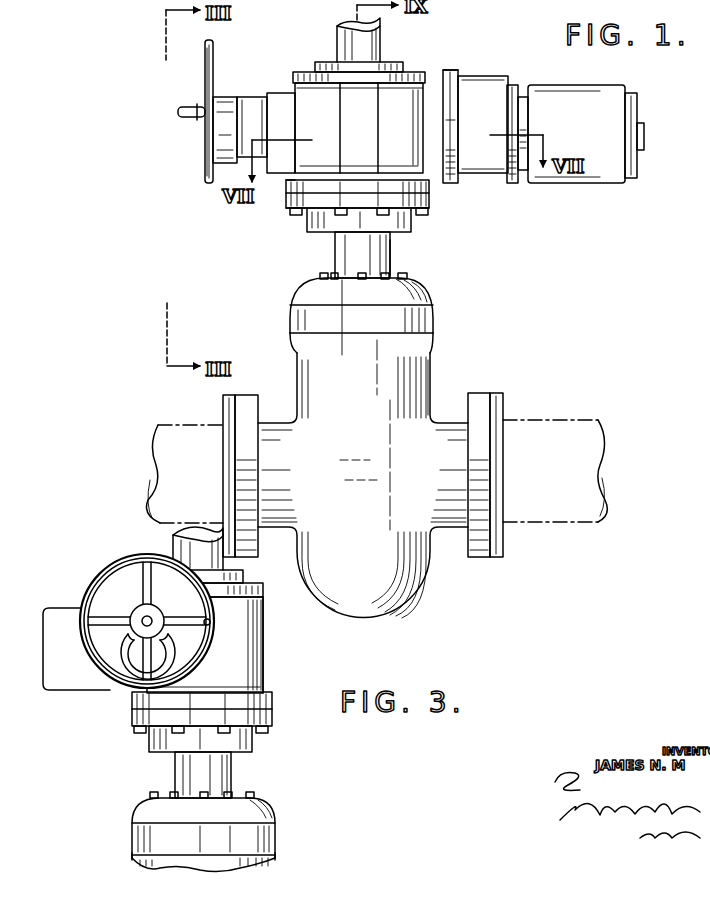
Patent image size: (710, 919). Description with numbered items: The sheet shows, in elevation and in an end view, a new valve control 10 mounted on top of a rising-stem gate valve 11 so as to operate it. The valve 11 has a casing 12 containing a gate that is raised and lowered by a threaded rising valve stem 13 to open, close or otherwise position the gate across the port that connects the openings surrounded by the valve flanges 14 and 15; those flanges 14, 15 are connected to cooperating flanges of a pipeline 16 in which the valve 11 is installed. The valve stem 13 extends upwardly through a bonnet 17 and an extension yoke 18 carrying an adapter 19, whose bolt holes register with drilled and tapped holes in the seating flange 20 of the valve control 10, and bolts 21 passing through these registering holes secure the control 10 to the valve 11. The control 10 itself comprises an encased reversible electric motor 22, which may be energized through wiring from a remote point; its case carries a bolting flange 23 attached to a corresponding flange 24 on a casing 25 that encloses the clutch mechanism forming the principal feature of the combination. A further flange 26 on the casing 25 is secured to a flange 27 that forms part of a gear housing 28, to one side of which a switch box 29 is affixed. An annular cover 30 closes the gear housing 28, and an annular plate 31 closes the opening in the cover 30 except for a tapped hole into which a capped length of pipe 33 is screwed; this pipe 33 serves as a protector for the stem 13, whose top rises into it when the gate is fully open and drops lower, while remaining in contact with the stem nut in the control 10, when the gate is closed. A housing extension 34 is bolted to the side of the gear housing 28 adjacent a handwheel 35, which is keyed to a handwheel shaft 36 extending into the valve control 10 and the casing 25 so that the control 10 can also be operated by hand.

In FIG. 1, the valve control 10 is at (407, 116).
In FIG. 3, the valve control 10 is at (242, 619).
In FIG. 1, the valve 11 is at (368, 383).
In FIG. 3, the valve 11 is at (272, 866).
In FIG. 1, the casing 12 is at (432, 380).
In FIG. 1, the valve stem 13 is at (335, 255).
In FIG. 1, the valve flange 14 is at (244, 400).
In FIG. 1, the valve flange 15 is at (480, 398).
In FIG. 1, the pipeline 16 is at (160, 425).
In FIG. 1, the bonnet 17 is at (428, 298).
In FIG. 3, the bonnet 17 is at (150, 820).
In FIG. 1, the extension yoke 18 is at (390, 255).
In FIG. 3, the extension yoke 18 is at (175, 770).
In FIG. 1, the adapter 19 is at (424, 206).
In FIG. 3, the adapter 19 is at (140, 729).
In FIG. 1, the seating flange 20 is at (430, 185).
In FIG. 3, the seating flange 20 is at (132, 704).
In FIG. 1, the bolts 21 is at (340, 216).
In FIG. 3, the bolts 21 is at (178, 734).
In FIG. 1, the reversible electric motor 22 is at (582, 129).
In FIG. 1, the bolting flange 23 is at (520, 96).
In FIG. 1, the flange 24 is at (510, 85).
In FIG. 1, the casing 25 is at (490, 111).
In FIG. 1, the flange 26 is at (455, 68).
In FIG. 1, the flange 27 is at (447, 70).
In FIG. 1, the gear housing 28 is at (286, 186).
In FIG. 3, the gear housing 28 is at (265, 650).
In FIG. 3, the switch box 29 is at (76, 665).
In FIG. 1, the annular cover 30 is at (294, 78).
In FIG. 3, the annular cover 30 is at (262, 588).
In FIG. 1, the annular plate 31 is at (318, 62).
In FIG. 3, the annular plate 31 is at (243, 578).
In FIG. 1, the pipe 33 is at (340, 28).
In FIG. 3, the pipe 33 is at (174, 545).
In FIG. 1, the housing extension 34 is at (250, 108).
In FIG. 3, the housing extension 34 is at (180, 655).
In FIG. 1, the handwheel 35 is at (206, 70).
In FIG. 3, the handwheel 35 is at (118, 562).
In FIG. 1, the handwheel shaft 36 is at (222, 103).
In FIG. 3, the handwheel shaft 36 is at (146, 621).